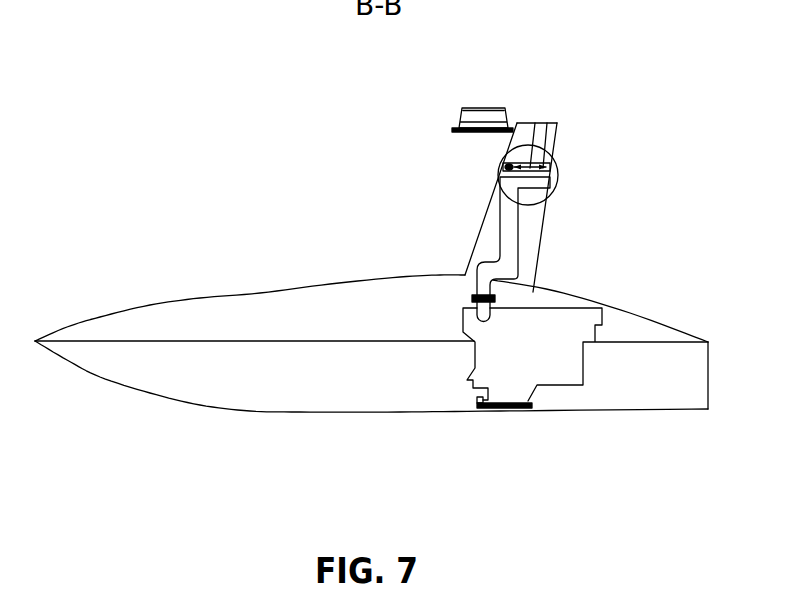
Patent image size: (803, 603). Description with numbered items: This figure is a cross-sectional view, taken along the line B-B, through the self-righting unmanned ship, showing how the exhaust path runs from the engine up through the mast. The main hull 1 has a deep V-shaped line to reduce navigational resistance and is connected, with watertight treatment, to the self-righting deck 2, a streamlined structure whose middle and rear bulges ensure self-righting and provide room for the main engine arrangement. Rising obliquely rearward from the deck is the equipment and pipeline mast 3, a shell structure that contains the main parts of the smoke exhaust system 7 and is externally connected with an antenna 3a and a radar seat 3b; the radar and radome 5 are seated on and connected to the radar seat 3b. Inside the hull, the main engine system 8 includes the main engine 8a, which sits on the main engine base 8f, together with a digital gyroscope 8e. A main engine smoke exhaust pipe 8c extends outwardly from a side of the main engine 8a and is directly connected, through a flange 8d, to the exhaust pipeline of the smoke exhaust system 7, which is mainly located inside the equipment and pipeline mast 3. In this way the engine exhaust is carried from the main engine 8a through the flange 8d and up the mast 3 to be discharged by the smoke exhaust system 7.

The main hull 1 is at (203, 408).
The self-righting deck 2 is at (377, 279).
The equipment and pipeline mast 3 is at (486, 201).
The antenna 3a is at (552, 123).
The radar seat 3b is at (448, 129).
The radar and radome 5 is at (483, 107).
The smoke exhaust system 7 is at (556, 193).
The main engine system 8 is at (453, 311).
The main engine 8a is at (495, 360).
The main engine smoke exhaust pipe 8c is at (490, 311).
The flange 8d is at (494, 298).
The digital gyroscope 8e is at (477, 407).
The main engine base 8f is at (505, 410).